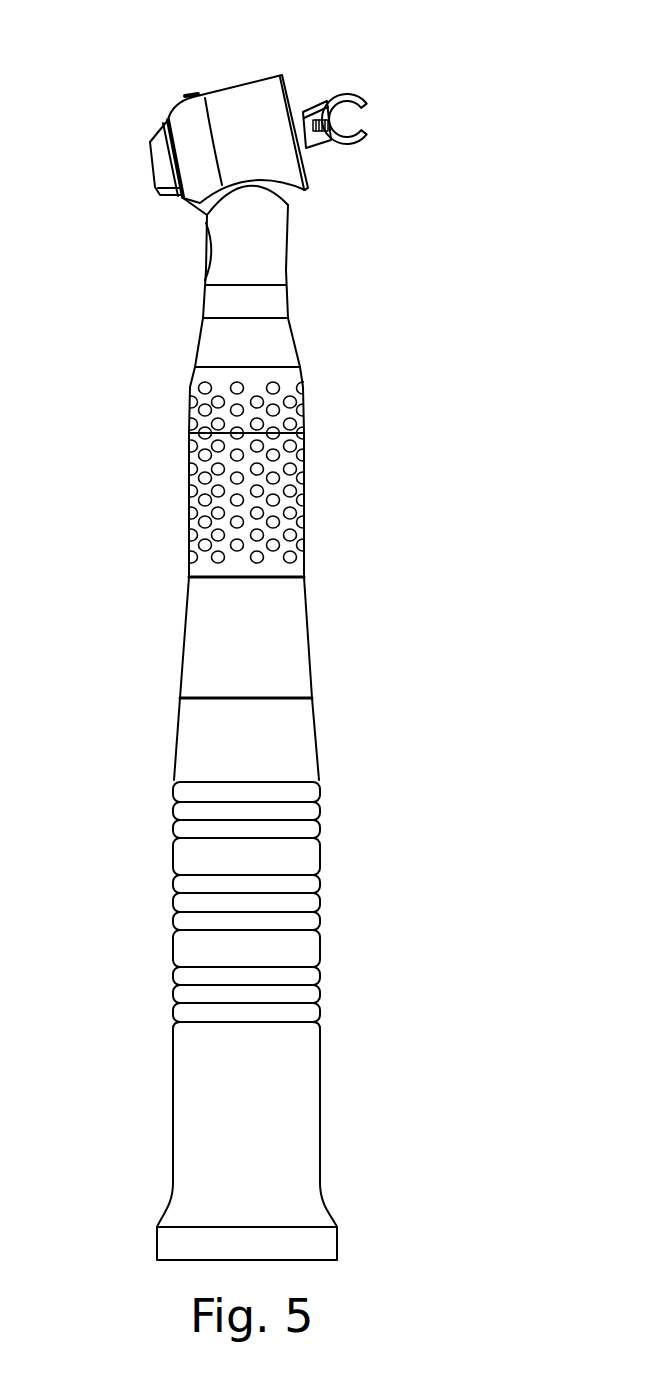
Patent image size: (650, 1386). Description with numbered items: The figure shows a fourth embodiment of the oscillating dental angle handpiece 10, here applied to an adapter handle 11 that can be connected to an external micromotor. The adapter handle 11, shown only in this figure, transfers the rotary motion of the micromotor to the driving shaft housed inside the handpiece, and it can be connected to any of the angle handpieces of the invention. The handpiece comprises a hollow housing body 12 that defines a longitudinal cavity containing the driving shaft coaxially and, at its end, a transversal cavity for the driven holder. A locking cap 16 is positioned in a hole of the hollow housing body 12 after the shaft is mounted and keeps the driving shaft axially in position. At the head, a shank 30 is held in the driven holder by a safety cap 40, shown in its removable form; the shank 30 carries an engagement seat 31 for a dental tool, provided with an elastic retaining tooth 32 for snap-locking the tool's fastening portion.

The oscillating dental angle handpiece 10 is at (312, 473).
The adapter handle 11 is at (318, 977).
The hollow housing body 12 is at (273, 348).
The locking cap 16 is at (207, 257).
The shank 30 is at (303, 110).
The engagement seat 31 is at (360, 120).
The elastic retaining tooth 32 is at (320, 110).
The safety cap 40 is at (167, 162).